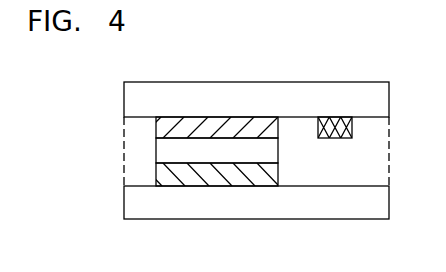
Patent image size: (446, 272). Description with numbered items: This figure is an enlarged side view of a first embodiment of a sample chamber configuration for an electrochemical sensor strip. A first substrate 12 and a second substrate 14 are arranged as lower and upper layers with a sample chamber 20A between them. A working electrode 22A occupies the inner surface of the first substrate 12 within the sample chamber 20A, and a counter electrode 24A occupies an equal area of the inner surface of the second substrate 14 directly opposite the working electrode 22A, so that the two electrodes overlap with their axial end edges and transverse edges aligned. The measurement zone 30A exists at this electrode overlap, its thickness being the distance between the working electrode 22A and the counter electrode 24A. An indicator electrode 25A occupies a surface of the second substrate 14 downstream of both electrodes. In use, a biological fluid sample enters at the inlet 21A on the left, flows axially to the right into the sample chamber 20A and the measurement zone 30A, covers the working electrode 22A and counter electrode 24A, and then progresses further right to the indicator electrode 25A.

The first substrate 12 is at (332, 219).
The second substrate 14 is at (328, 82).
The sample chamber 20A is at (137, 130).
The inlet 21A is at (104, 149).
The working electrode 22A is at (278, 174).
The counter electrode 24A is at (278, 120).
The indicator electrode 25A is at (352, 132).
The measurement zone 30A is at (175, 150).